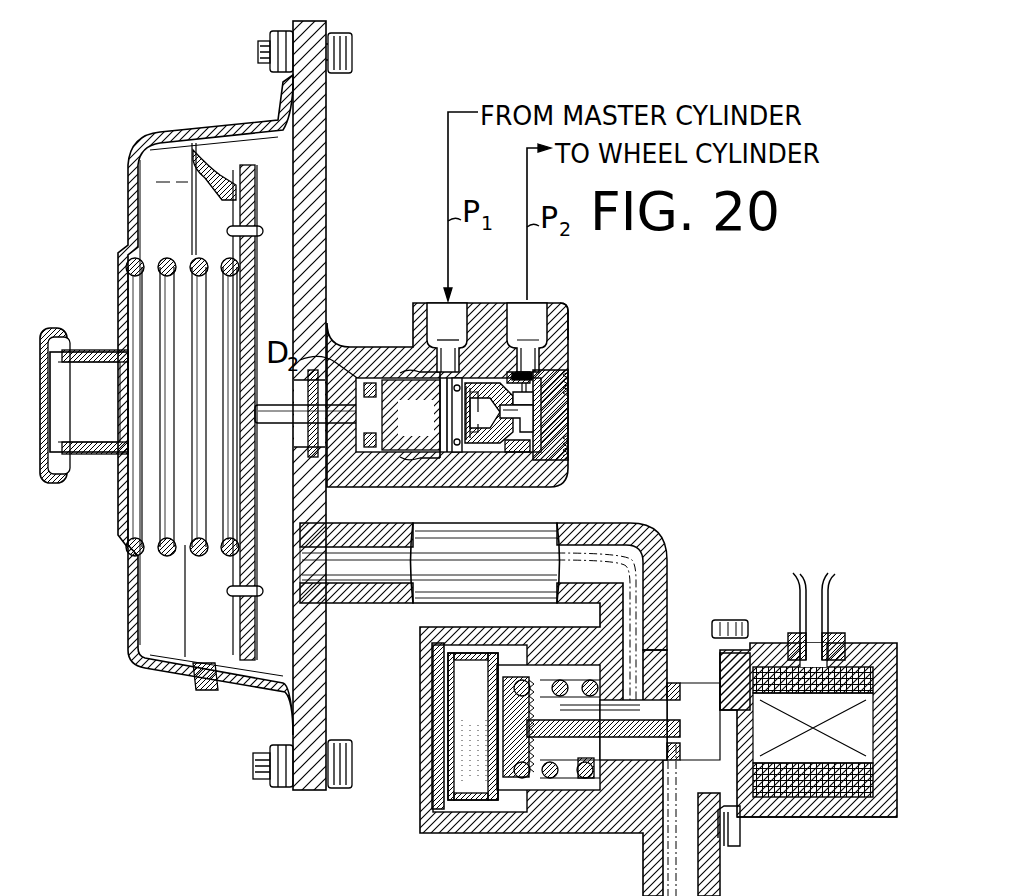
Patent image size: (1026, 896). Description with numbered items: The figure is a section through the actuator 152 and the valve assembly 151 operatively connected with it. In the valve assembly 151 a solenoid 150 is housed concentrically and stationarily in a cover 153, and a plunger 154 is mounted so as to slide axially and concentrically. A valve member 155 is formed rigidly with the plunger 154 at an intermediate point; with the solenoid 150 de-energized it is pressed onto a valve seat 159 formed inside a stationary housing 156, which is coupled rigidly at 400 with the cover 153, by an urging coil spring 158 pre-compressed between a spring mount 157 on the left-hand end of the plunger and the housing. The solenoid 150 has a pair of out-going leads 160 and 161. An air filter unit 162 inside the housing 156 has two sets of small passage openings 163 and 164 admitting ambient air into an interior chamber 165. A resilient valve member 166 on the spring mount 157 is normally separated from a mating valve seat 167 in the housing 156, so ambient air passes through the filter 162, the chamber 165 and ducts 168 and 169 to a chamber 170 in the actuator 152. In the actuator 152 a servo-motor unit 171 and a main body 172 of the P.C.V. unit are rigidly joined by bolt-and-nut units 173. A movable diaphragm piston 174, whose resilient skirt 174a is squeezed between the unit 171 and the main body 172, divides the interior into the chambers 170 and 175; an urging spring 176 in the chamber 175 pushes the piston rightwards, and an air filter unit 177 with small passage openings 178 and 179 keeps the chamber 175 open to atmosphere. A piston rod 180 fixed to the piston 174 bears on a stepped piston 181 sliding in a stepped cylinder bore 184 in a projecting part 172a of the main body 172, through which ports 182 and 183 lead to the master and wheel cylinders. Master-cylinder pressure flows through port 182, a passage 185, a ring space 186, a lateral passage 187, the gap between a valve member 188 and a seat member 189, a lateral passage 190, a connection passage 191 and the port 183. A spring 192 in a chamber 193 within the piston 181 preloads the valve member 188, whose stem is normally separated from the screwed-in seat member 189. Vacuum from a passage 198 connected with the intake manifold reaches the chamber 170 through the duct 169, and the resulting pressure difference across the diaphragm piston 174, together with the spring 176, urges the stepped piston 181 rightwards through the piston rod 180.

The solenoid 150 is at (828, 701).
The valve assembly 151 is at (878, 632).
The actuator 152 is at (124, 676).
The cover 153 is at (800, 818).
The plunger 154 is at (773, 744).
The valve member 155 is at (682, 705).
The stationary housing 156 is at (452, 828).
The spring mount 157 is at (510, 790).
The urging coil spring 158 is at (556, 778).
The valve seat 159 is at (622, 760).
The out-going lead 160 is at (830, 573).
The out-going lead 161 is at (800, 575).
The air filter unit 162 is at (493, 698).
The small passage openings 163 is at (430, 706).
The small passage openings 164 is at (494, 778).
The interior chamber 165 is at (590, 780).
The resilient valve member 166 is at (528, 688).
The mating valve seat 167 is at (565, 686).
The duct 168 is at (610, 706).
The duct 169 is at (410, 590).
The chamber 170 is at (298, 226).
The servo-motor unit 171 is at (126, 178).
The main body 172 is at (327, 170).
The projecting part 172a is at (569, 320).
The bolt-and-nut units 173 is at (352, 58).
The movable diaphragm piston 174 is at (255, 523).
The resilient skirt 174a is at (205, 690).
The chamber 175 is at (188, 226).
The urging spring 176 is at (172, 557).
The air filter unit 177 is at (106, 432).
The small passage openings 178 is at (55, 384).
The small passage openings 179 is at (112, 352).
The piston rod 180 is at (286, 425).
The stepped piston 181 is at (410, 475).
The port 182 is at (460, 300).
The port 183 is at (536, 312).
The stepped cylinder bore 184 is at (478, 452).
The passage 185 is at (445, 378).
The ring space 186 is at (448, 372).
The lateral passage 187 is at (468, 312).
The valve member 188 is at (533, 398).
The seat member 189 is at (528, 452).
The lateral passage 190 is at (556, 460).
The connection passage 191 is at (532, 360).
The spring 192 is at (462, 452).
The chamber / stem 193 is at (520, 416).
The passage 198 is at (720, 870).
The coupling 400 is at (705, 615).